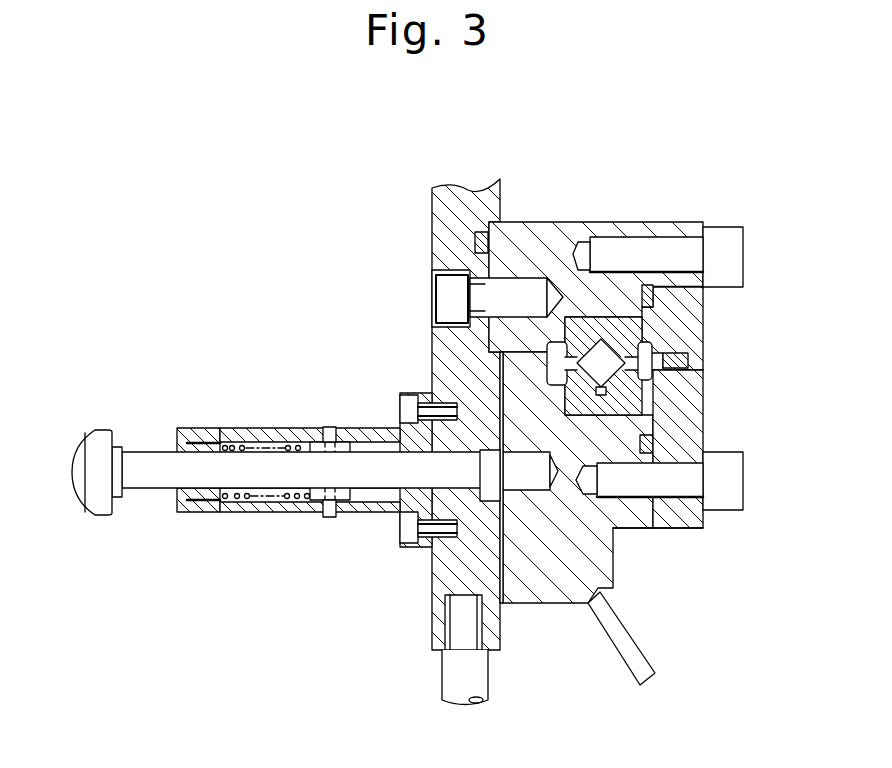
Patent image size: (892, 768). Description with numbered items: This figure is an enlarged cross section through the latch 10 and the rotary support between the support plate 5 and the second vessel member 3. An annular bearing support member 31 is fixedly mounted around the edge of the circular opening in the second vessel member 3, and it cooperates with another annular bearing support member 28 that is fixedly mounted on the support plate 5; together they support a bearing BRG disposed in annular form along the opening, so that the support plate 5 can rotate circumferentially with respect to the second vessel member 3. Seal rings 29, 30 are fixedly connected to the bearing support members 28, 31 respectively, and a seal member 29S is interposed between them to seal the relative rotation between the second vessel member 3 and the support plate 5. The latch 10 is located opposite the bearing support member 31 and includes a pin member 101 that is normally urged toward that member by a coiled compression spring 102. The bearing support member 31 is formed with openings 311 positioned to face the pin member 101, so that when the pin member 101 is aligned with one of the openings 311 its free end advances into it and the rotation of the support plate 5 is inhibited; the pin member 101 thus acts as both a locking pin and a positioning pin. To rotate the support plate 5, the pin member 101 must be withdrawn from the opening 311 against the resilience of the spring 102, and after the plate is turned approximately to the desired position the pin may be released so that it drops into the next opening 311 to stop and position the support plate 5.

The second vessel member 3 is at (633, 651).
The support plate 5 is at (447, 247).
The latch 10 is at (275, 517).
The bearing support member 28 is at (540, 240).
The seal ring 29 is at (688, 330).
The seal member 29S is at (688, 357).
The seal ring 30 is at (693, 398).
The bearing support member 31 is at (575, 590).
The opening 311 is at (517, 487).
The pin member 101 is at (145, 480).
The coiled compression spring 102 is at (235, 505).
The bearing BRG is at (563, 365).